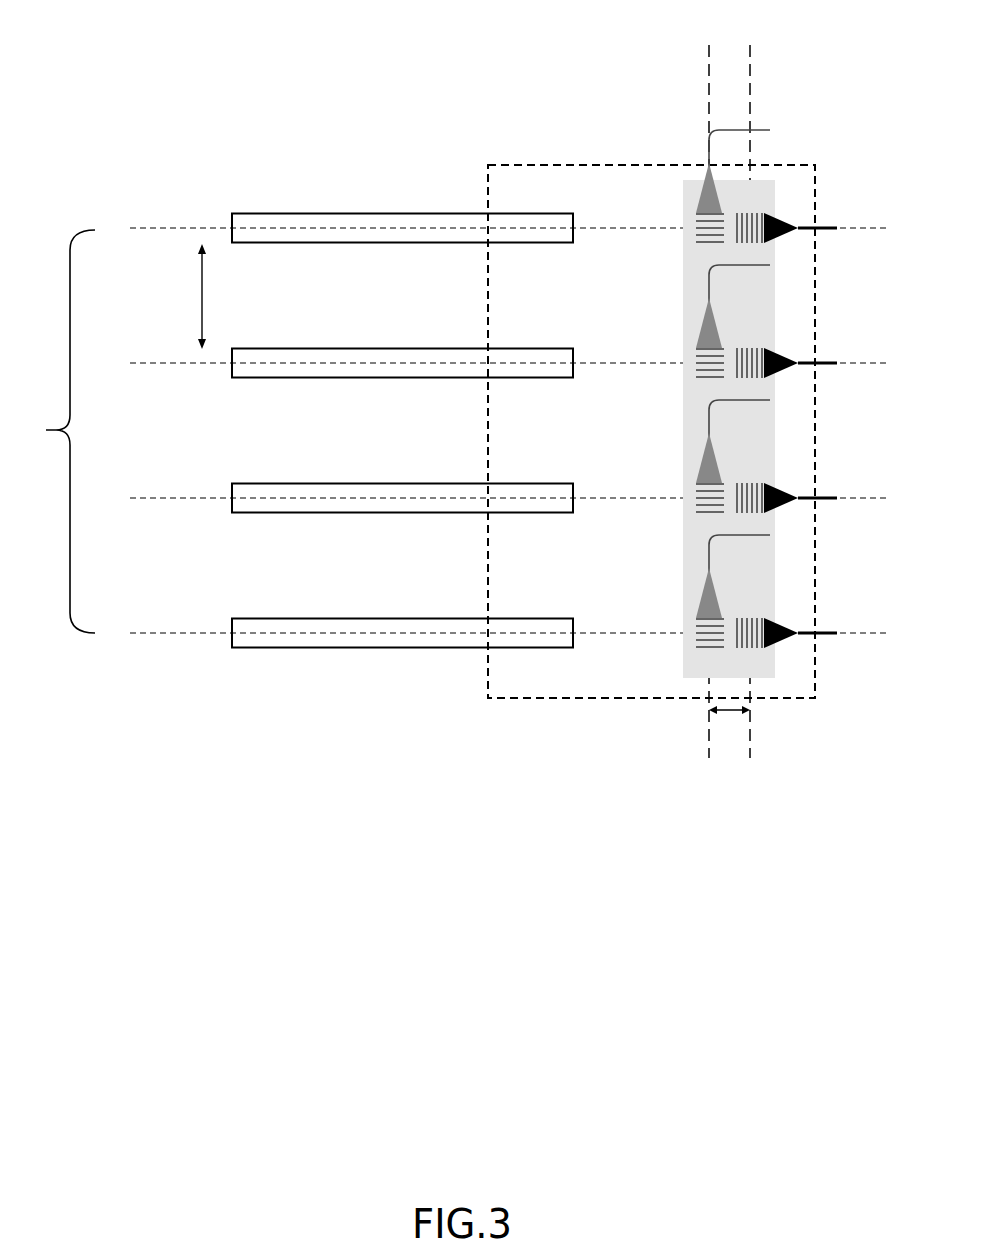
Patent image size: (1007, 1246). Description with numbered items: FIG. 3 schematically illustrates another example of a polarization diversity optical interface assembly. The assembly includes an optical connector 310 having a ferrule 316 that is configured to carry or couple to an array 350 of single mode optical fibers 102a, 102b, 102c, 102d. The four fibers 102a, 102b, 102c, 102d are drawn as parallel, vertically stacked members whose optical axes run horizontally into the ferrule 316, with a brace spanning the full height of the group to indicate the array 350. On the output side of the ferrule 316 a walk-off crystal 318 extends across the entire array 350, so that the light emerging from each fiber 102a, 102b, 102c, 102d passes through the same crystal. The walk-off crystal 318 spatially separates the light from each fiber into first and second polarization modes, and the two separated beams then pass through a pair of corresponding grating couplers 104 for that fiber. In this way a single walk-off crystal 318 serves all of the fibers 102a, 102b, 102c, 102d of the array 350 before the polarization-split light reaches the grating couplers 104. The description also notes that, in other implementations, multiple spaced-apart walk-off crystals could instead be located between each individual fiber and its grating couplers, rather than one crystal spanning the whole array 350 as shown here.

The optical connector 310 is at (501, 69).
The ferrule 316 is at (527, 160).
The walk-off crystal 318 is at (762, 180).
The grating couplers 104 is at (710, 178).
The array of single mode optical fibers 350 is at (289, 399).
The single mode optical fiber 102a is at (403, 223).
The single mode optical fiber 102b is at (435, 363).
The single mode optical fiber 102c is at (405, 497).
The single mode optical fiber 102d is at (378, 633).